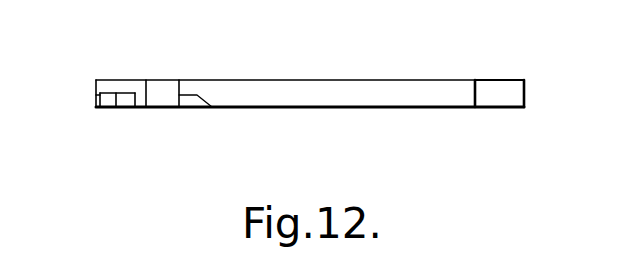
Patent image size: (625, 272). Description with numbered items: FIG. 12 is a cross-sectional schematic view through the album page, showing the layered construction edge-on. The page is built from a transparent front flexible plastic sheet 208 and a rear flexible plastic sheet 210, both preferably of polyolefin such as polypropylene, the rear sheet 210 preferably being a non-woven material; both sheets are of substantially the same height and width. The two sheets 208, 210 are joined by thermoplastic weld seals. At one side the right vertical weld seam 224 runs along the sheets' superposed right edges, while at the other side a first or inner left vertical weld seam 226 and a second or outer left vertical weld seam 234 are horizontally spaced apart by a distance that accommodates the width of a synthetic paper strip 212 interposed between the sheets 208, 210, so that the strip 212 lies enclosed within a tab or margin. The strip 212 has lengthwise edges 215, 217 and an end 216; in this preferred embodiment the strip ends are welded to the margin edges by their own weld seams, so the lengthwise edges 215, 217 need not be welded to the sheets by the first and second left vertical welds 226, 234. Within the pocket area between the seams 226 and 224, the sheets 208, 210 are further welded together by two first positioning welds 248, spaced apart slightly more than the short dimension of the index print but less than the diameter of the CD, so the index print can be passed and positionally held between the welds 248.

The first sheet 208 is at (402, 80).
The second sheet 210 is at (408, 108).
The synthetic paper strip 212 is at (109, 86).
The lengthwise edge 215 is at (130, 108).
The end 216 is at (115, 107).
The lengthwise edge 217 is at (100, 108).
The right vertical weld seam 224 is at (525, 93).
The first left vertical weld seam 226 is at (147, 103).
The second left vertical weld seam 234 is at (67, 92).
The first positioning welds 248 is at (215, 109).